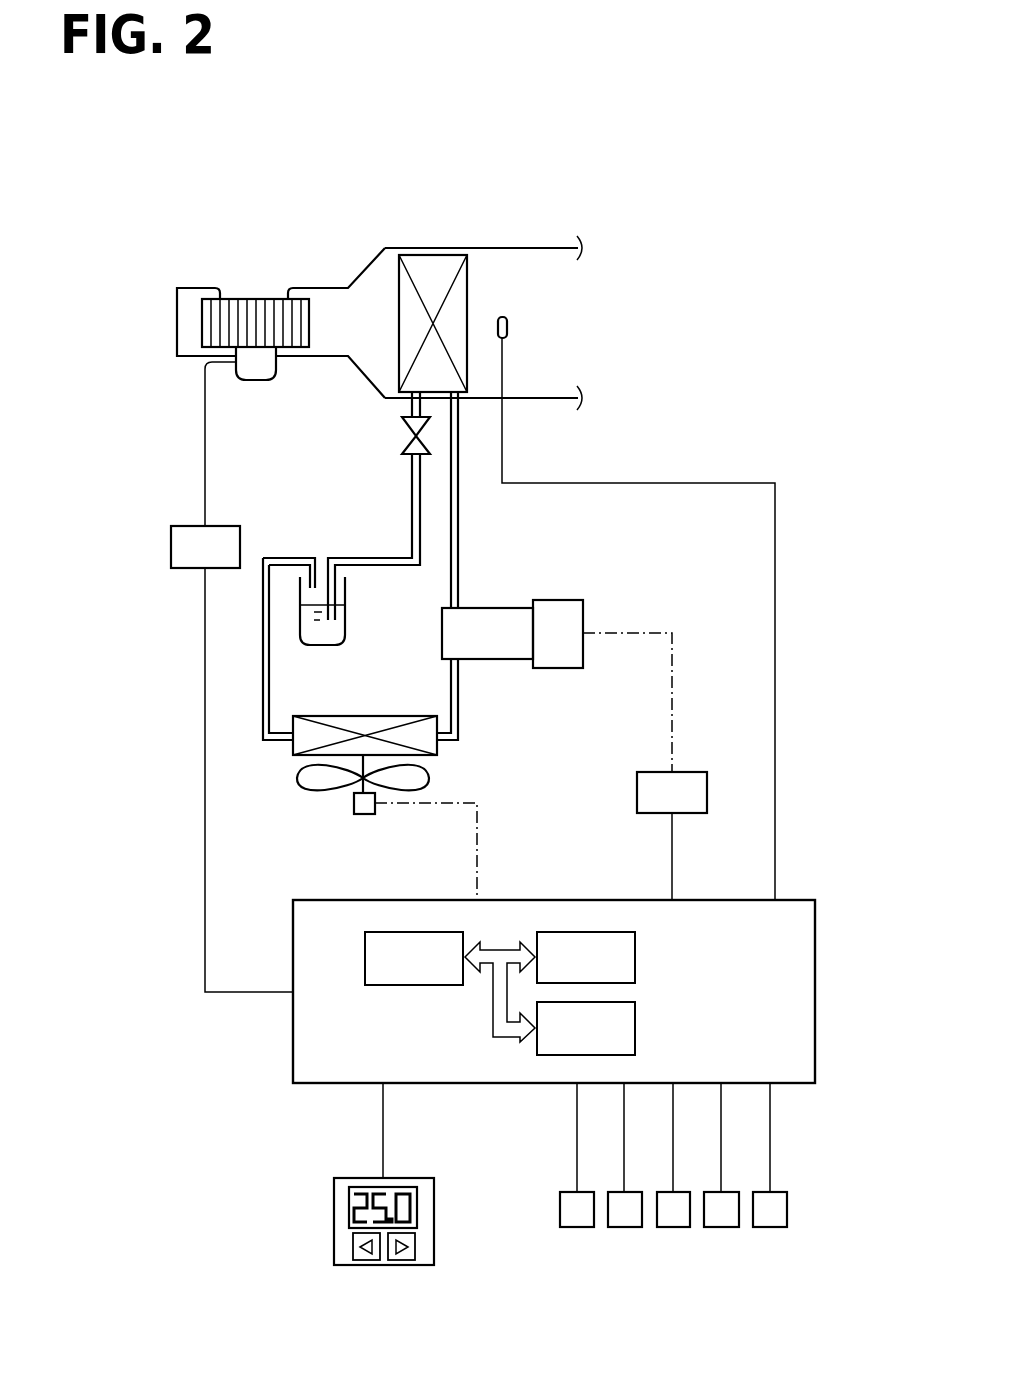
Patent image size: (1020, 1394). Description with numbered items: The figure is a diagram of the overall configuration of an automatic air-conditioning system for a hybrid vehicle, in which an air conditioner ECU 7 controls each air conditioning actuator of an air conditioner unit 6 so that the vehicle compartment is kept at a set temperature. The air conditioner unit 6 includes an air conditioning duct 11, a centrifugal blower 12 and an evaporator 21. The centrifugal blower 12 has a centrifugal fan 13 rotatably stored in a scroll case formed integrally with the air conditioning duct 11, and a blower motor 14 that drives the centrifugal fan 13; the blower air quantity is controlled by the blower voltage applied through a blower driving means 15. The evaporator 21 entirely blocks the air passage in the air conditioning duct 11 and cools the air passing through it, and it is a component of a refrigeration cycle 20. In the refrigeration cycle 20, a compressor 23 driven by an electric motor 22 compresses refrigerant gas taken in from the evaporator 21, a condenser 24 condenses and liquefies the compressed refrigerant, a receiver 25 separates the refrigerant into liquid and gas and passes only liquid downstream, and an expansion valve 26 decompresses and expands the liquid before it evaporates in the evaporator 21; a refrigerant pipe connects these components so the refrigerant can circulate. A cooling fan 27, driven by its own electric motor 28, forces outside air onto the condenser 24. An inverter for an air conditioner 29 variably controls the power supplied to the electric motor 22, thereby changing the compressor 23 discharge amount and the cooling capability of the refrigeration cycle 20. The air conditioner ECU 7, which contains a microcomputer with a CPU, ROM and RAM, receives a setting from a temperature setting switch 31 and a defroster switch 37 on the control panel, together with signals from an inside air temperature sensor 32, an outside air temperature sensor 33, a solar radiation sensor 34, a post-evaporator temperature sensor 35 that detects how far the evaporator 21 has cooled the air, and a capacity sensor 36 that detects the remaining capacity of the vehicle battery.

The air conditioner unit 6 is at (247, 270).
The air conditioner ECU 7 is at (797, 950).
The air conditioning duct 11 is at (546, 248).
The centrifugal blower 12 is at (170, 285).
The centrifugal fan 13 is at (228, 326).
The blower motor 14 is at (258, 364).
The blower driving means 15 is at (192, 540).
The refrigeration cycle 20 is at (263, 693).
The evaporator 21 is at (431, 268).
The electric motor 22 is at (550, 615).
The compressor 23 is at (484, 620).
The condenser 24 is at (368, 722).
The receiver 25 is at (334, 630).
The expansion valve 26 is at (400, 437).
The cooling fan 27 is at (307, 777).
The electric motor 28 is at (355, 805).
The inverter for an air conditioner 29 is at (663, 785).
The temperature setting switch 31 is at (334, 1222).
The inside air temperature sensor 32 is at (577, 1227).
The outside air temperature sensor 33 is at (624, 1227).
The solar radiation sensor 34 is at (673, 1227).
The post-evaporator temperature sensor 35 is at (502, 317).
The capacity sensor 36 is at (721, 1227).
The defroster switch 37 is at (770, 1227).